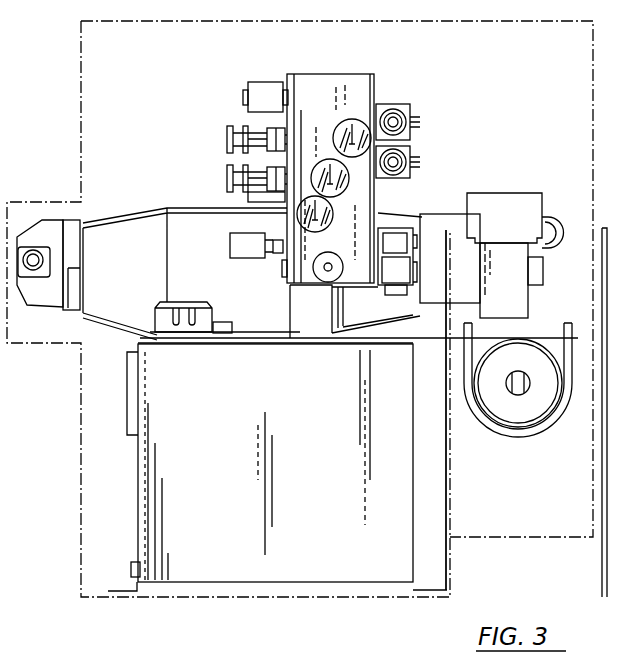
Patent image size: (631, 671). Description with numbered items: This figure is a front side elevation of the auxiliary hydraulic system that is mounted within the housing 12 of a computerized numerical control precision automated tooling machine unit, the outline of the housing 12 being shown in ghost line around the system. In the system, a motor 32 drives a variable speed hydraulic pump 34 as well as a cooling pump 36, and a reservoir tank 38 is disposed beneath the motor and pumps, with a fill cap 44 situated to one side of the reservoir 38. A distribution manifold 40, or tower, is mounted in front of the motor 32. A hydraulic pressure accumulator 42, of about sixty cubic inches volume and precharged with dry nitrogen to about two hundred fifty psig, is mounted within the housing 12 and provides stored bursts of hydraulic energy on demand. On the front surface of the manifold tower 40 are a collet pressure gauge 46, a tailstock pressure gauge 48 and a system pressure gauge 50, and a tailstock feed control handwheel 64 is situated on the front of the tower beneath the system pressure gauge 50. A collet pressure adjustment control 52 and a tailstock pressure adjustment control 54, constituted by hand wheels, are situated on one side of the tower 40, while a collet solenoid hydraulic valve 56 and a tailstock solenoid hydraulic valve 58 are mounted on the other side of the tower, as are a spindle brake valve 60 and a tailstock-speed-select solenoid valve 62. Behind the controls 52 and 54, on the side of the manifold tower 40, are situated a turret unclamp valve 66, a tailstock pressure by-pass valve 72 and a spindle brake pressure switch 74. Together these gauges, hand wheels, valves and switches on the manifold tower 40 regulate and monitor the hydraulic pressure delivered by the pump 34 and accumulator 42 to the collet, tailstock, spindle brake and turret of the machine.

The housing 12 is at (78, 488).
The motor 32 is at (255, 310).
The variable speed hydraulic pump 34 is at (512, 190).
The cooling pump 36 is at (48, 210).
The reservoir tank 38 is at (173, 530).
The distribution manifold 40 is at (320, 83).
The hydraulic pressure accumulator 42 is at (520, 418).
The fill cap 44 is at (185, 323).
The collet pressure gauge 46 is at (358, 130).
The tailstock pressure gauge 48 is at (318, 133).
The system pressure gauge 50 is at (335, 212).
The collet pressure adjustment control 52 is at (227, 128).
The tailstock pressure adjustment control 54 is at (227, 172).
The collet solenoid hydraulic valve 56 is at (408, 110).
The tailstock solenoid hydraulic valve 58 is at (408, 155).
The spindle brake valve 60 is at (397, 230).
The tailstock-speed-select solenoid valve 62 is at (392, 283).
The tailstock feed control handwheel 64 is at (328, 272).
The turret unclamp valve 66 is at (263, 88).
The tailstock pressure by-pass valve 72 is at (262, 200).
The spindle brake pressure switch 74 is at (235, 245).